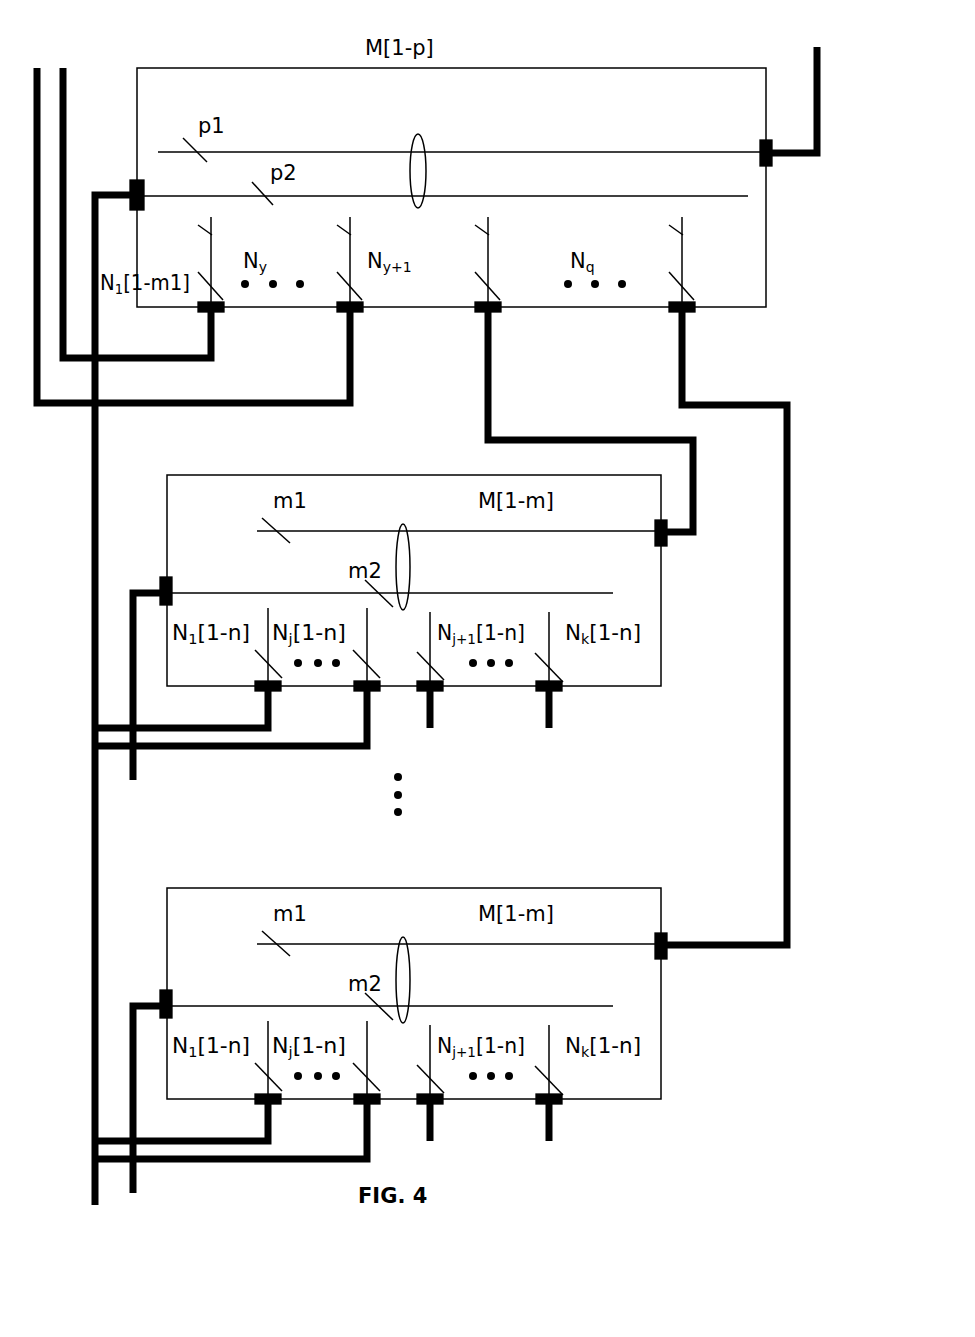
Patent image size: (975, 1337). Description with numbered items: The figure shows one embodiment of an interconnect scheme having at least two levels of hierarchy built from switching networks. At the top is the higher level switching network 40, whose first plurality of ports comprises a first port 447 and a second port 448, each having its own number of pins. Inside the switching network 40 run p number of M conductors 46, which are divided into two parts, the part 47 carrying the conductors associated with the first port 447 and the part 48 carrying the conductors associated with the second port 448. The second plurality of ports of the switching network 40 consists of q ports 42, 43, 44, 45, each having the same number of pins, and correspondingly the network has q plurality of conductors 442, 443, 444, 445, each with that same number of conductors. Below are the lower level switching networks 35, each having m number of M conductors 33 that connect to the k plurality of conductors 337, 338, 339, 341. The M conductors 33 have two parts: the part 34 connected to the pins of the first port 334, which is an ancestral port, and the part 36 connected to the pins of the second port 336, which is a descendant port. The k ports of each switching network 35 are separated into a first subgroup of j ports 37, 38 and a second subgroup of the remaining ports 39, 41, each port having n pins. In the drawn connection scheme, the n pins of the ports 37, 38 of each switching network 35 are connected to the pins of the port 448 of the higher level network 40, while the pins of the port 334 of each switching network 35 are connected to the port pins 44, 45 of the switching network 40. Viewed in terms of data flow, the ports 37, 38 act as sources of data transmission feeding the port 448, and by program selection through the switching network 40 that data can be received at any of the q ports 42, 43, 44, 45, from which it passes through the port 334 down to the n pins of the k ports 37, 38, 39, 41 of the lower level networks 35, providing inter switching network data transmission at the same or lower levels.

The switching network 40 is at (614, 68).
The M conductors 46 is at (421, 140).
The M conductors part 47 is at (315, 152).
The M conductors part 48 is at (518, 196).
The Ni[1-m1] conductors 442 is at (177, 260).
The Ni[1-m1] conductors 443 is at (317, 260).
The Ni[1-m1] conductors 444 is at (455, 260).
The Ni[1-m1] conductors 445 is at (648, 260).
The port 42 is at (205, 312).
The port 43 is at (343, 312).
The port 44 is at (483, 312).
The port 45 is at (675, 315).
The first port 447 is at (772, 160).
The second port 448 is at (133, 190).
The switching network 35 is at (280, 473).
The M conductors part 34 is at (330, 530).
The M conductors part 36 is at (465, 593).
The M conductors 33 is at (405, 552).
The Ni[1-n] conductors 337 is at (268, 610).
The Ni[1-n] conductors 338 is at (367, 610).
The Ni[1-n] conductors 339 is at (430, 623).
The Ni[1-n] conductors 341 is at (550, 623).
The port 37 is at (253, 690).
The port 38 is at (353, 692).
The port 39 is at (422, 692).
The port 41 is at (545, 693).
The first port 334 is at (667, 540).
The second port 336 is at (158, 583).